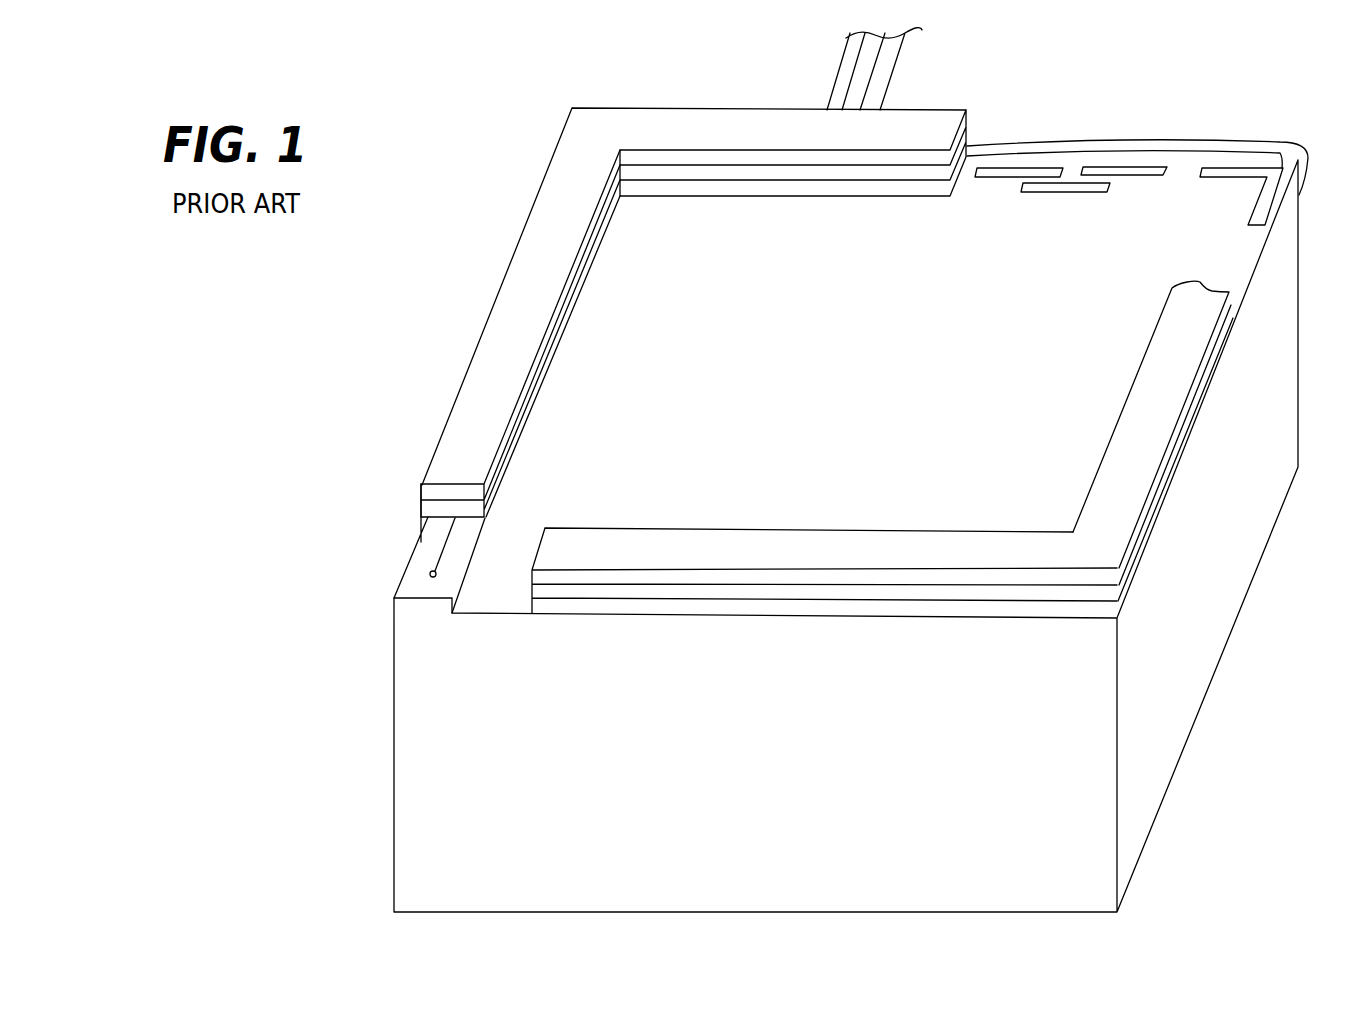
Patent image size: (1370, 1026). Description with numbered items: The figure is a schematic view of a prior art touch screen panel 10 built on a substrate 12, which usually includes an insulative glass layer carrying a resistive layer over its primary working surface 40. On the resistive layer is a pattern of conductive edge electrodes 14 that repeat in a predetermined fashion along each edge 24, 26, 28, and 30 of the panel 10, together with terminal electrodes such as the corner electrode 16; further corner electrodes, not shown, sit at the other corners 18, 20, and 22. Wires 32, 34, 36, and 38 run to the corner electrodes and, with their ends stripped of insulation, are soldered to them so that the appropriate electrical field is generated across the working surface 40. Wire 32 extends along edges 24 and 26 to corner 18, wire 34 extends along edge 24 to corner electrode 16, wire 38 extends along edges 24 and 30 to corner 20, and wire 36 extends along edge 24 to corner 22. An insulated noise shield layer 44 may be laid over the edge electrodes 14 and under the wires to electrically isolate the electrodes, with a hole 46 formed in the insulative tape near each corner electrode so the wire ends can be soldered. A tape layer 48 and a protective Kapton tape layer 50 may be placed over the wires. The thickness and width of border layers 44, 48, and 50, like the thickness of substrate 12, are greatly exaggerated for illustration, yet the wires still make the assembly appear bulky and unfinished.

The touch screen panel 10 is at (482, 124).
The substrate 12 is at (1273, 318).
The edge electrodes 14 is at (1142, 180).
The corner electrode 16 is at (1223, 180).
The corner 18 is at (1120, 619).
The corner 20 is at (394, 614).
The corner 22 is at (621, 190).
The edge 24 is at (963, 190).
The edge 26 is at (1198, 420).
The edge 28 is at (781, 620).
The edge 30 is at (538, 425).
The wire 32 is at (1168, 140).
The wire 34 is at (1240, 145).
The wire 36 is at (836, 87).
The wire 38 is at (440, 553).
The working surface 40 is at (868, 386).
The insulated noise shield layer 44 is at (875, 190).
The hole 46 is at (428, 574).
The tape layer 48 is at (820, 175).
The protective tape layer 50 is at (771, 153).